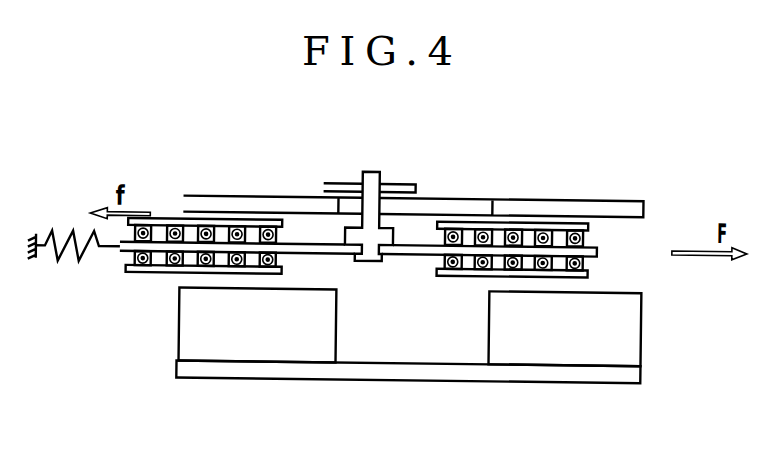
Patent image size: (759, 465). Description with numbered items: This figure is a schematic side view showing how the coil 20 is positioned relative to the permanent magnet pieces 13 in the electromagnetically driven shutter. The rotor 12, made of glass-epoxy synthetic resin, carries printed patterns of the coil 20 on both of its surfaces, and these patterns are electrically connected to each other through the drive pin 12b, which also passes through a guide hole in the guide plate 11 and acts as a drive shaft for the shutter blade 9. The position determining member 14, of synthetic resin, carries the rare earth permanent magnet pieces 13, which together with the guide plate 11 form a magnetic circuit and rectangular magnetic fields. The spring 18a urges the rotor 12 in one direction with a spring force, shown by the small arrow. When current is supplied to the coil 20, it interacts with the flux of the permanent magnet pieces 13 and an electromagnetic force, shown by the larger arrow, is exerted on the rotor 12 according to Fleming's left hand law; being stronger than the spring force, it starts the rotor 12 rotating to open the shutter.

The shutter blade 9 is at (403, 185).
The guide plate 11 is at (628, 198).
The rotor 12 is at (597, 247).
The drive pin 12b is at (370, 172).
The permanent magnet pieces 13 is at (188, 326).
The position determining member 14 is at (398, 372).
The spring 18a is at (85, 255).
The coil 20 is at (583, 263).